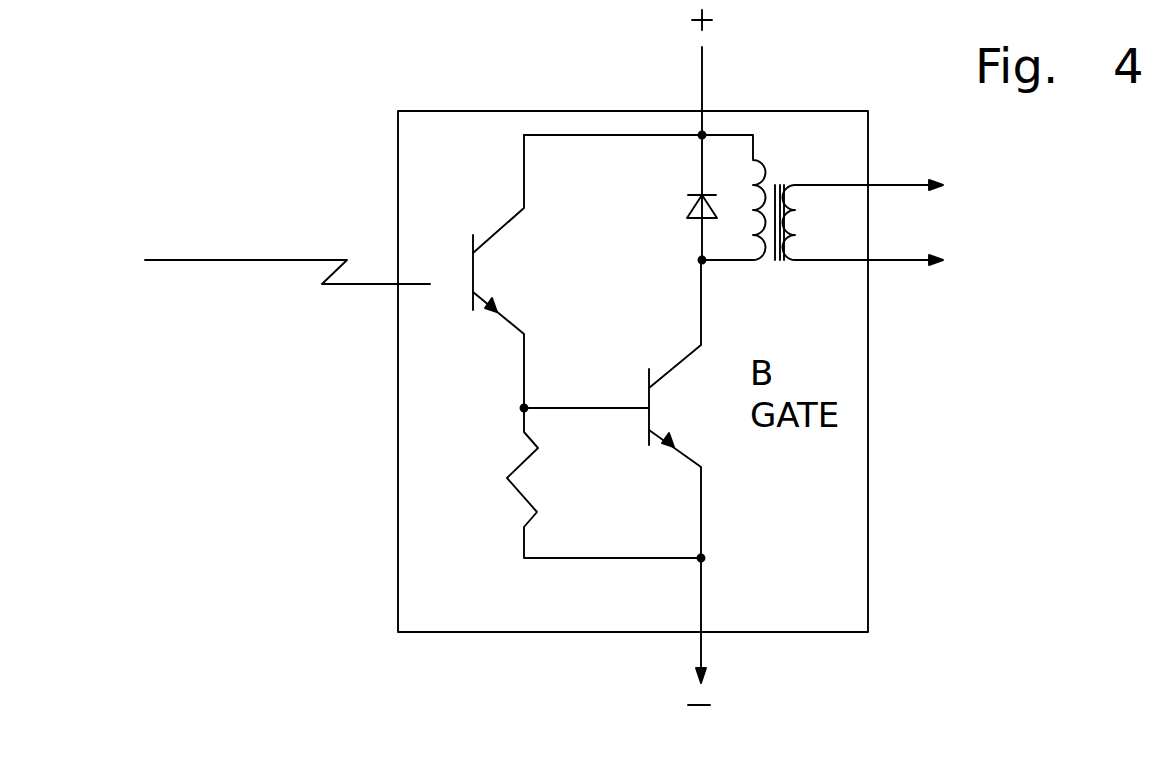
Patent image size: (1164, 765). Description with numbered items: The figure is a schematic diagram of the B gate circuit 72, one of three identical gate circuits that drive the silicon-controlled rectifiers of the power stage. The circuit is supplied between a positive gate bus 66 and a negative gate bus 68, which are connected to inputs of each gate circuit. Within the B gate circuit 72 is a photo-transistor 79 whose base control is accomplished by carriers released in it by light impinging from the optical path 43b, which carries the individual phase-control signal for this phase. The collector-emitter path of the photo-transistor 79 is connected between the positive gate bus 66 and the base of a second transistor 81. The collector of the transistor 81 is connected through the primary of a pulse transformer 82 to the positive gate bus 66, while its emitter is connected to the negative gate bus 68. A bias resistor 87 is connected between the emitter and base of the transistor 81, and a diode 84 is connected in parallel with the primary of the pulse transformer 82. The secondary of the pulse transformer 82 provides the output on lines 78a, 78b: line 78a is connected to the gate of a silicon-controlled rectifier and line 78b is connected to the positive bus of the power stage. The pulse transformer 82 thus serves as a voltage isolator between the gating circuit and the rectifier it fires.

The optical path 43b is at (286, 266).
The positive gate bus 66 is at (703, 90).
The negative gate bus 68 is at (700, 650).
The B gate circuit 72 is at (868, 488).
The line 78a is at (883, 238).
The line 78b is at (883, 162).
The photo-transistor 79 is at (481, 278).
The second transistor 81 is at (645, 420).
The pulse transformer 82 is at (778, 262).
The diode 84 is at (680, 218).
The bias resistor 87 is at (513, 468).